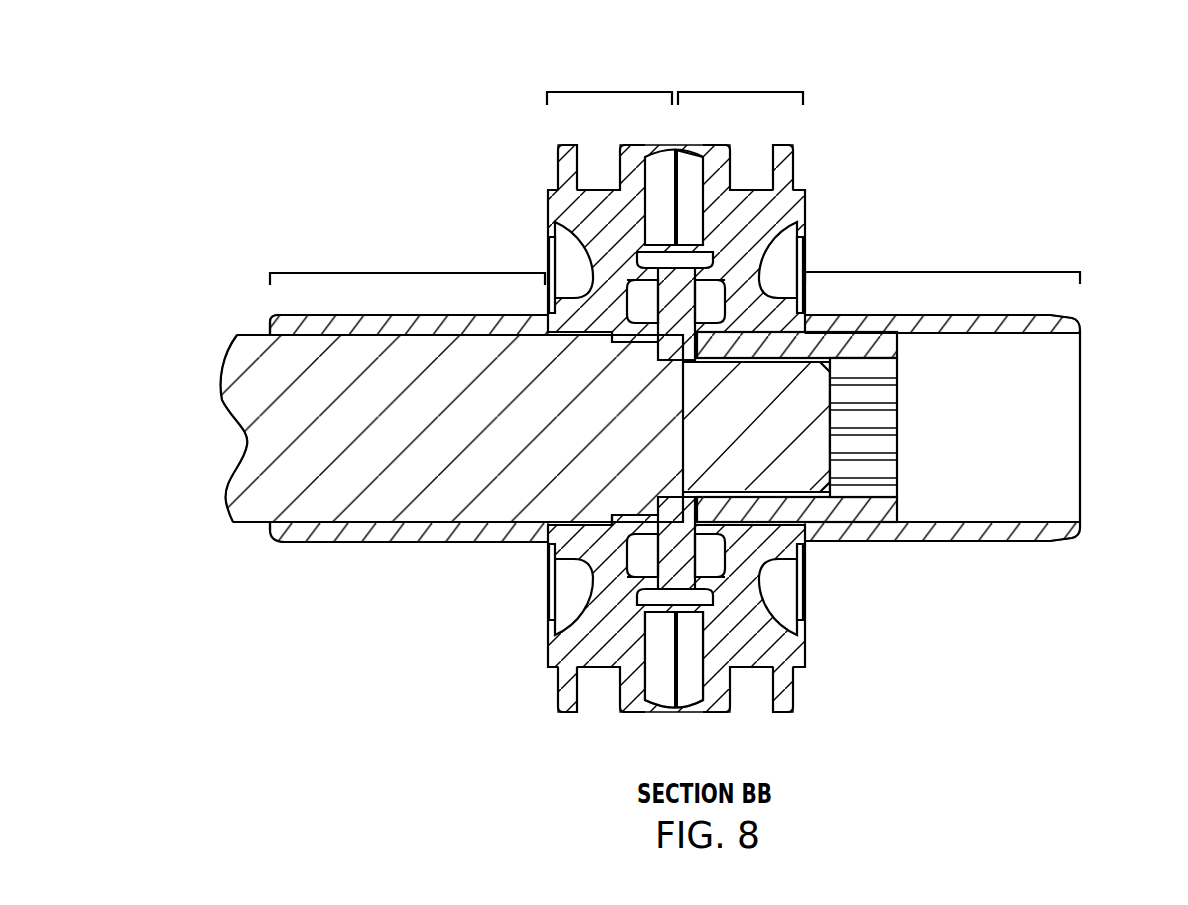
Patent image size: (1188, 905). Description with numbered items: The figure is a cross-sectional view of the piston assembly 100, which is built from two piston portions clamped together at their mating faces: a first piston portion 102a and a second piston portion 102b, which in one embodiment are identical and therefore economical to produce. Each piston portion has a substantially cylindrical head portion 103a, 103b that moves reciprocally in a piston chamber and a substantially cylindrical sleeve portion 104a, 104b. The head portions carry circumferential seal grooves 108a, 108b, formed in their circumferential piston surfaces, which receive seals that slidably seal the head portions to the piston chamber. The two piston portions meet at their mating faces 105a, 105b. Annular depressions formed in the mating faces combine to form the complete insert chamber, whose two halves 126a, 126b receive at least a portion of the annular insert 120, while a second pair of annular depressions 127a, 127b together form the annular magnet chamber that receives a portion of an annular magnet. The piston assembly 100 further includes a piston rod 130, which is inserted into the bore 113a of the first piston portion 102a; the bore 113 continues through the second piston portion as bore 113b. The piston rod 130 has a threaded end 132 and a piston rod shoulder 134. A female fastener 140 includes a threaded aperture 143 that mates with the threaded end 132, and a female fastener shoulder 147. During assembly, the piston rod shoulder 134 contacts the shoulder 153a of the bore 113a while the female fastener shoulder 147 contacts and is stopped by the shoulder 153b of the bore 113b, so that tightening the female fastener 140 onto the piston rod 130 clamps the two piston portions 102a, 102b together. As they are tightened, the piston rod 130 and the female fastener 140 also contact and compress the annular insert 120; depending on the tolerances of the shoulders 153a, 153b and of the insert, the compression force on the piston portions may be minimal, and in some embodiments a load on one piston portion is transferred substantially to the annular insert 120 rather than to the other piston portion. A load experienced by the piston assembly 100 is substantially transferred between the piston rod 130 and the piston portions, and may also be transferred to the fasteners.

The piston assembly 100 is at (651, 434).
The first piston portion 102a is at (538, 184).
The second piston portion 102b is at (787, 391).
The head portion 103a is at (615, 90).
The head portion 103b is at (740, 90).
The sleeve portion 104a is at (408, 273).
The sleeve portion 104b is at (942, 272).
The mating face 105a is at (653, 147).
The mating face 105b is at (692, 147).
The circumferential seal groove 108a is at (594, 153).
The circumferential seal groove 108b is at (757, 153).
The bore 113 is at (680, 420).
The bore 113a is at (263, 527).
The bore 113b is at (1050, 332).
The annular insert 120 is at (705, 300).
The annular insert chamber 126a is at (575, 613).
The annular insert chamber 126b is at (700, 568).
The annular magnet chamber 127a is at (612, 243).
The annular magnet chamber 127b is at (765, 225).
The piston rod 130 is at (237, 517).
The threaded end 132 is at (572, 435).
The piston rod shoulder 134 is at (622, 522).
The female fastener 140 is at (898, 408).
The threaded aperture 143 is at (813, 315).
The female fastener shoulder 147 is at (735, 520).
The shoulder 153a is at (550, 550).
The shoulder 153b is at (755, 533).